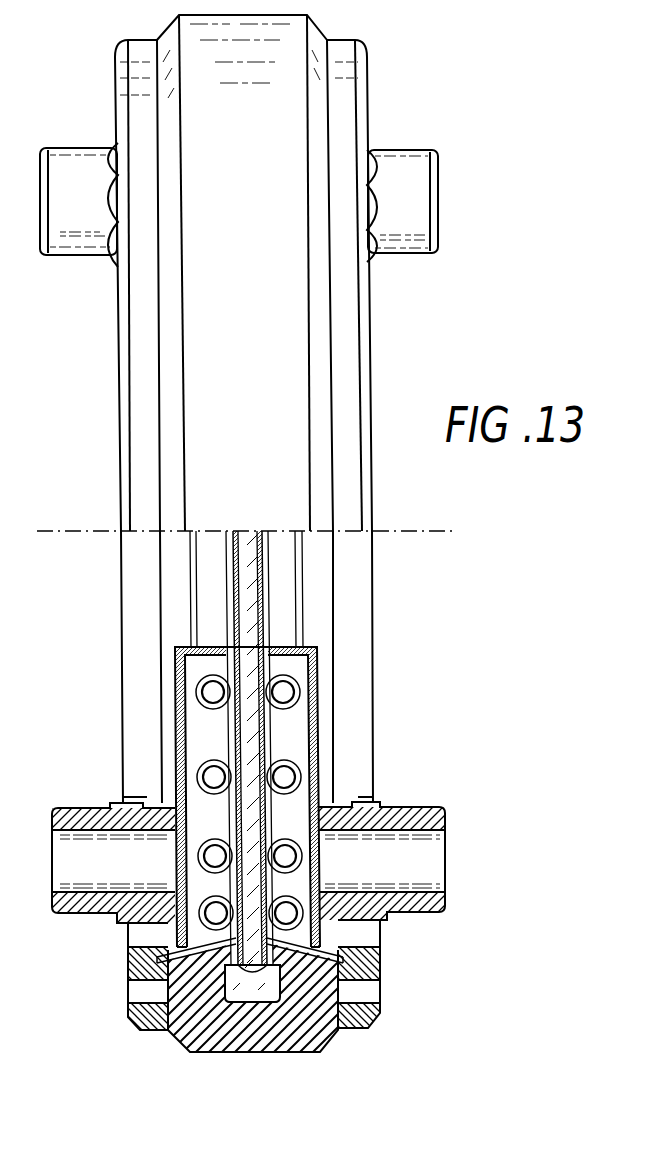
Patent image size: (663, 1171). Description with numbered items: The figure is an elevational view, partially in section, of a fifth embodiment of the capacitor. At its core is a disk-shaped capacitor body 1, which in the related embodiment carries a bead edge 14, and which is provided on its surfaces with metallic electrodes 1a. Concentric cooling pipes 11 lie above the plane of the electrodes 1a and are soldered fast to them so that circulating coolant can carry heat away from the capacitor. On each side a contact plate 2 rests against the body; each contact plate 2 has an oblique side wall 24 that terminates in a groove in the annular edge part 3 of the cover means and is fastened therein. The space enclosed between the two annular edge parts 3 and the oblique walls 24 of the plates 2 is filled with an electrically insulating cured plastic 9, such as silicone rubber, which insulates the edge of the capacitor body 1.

The capacitor body 1 is at (263, 752).
The metallic electrodes 1a is at (233, 1008).
The contact plate 2 is at (208, 732).
The annular edge part 3 is at (151, 349).
The electrically insulating cured plastic 9 is at (249, 224).
The cooling pipes 11 is at (203, 838).
The bead edge 14 is at (293, 1003).
The oblique side wall 24 is at (193, 1025).